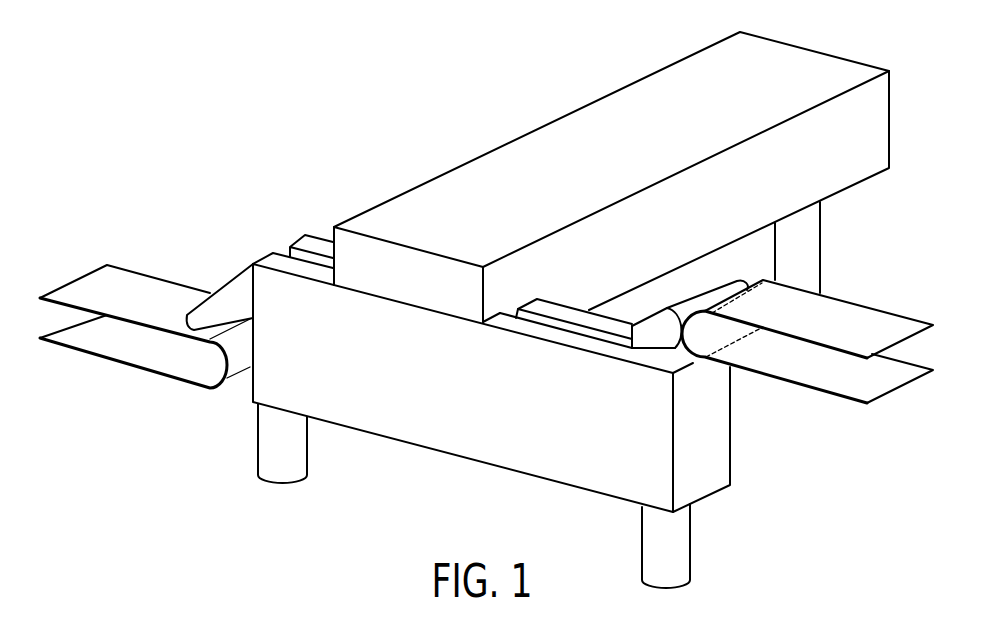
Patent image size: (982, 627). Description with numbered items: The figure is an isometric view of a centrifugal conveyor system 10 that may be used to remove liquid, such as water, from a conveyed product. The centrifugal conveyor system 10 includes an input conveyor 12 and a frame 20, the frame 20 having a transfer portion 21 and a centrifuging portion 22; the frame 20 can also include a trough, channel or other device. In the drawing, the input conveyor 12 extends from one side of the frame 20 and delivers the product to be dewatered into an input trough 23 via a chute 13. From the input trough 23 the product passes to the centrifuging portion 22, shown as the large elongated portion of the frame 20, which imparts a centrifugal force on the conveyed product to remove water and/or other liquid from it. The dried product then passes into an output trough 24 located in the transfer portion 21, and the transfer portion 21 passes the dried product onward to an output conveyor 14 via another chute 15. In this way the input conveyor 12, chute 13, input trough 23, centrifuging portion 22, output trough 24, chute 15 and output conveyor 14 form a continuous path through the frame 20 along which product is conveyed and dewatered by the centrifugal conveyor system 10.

The centrifugal conveyor system 10 is at (571, 310).
The input conveyor 12 is at (845, 317).
The chute 13 is at (648, 336).
The output conveyor 14 is at (120, 287).
The chute 15 is at (243, 292).
The frame 20 is at (486, 310).
The transfer portion 21 is at (432, 369).
The centrifuging portion 22 is at (713, 210).
The input trough 23 is at (570, 327).
The output trough 24 is at (307, 253).